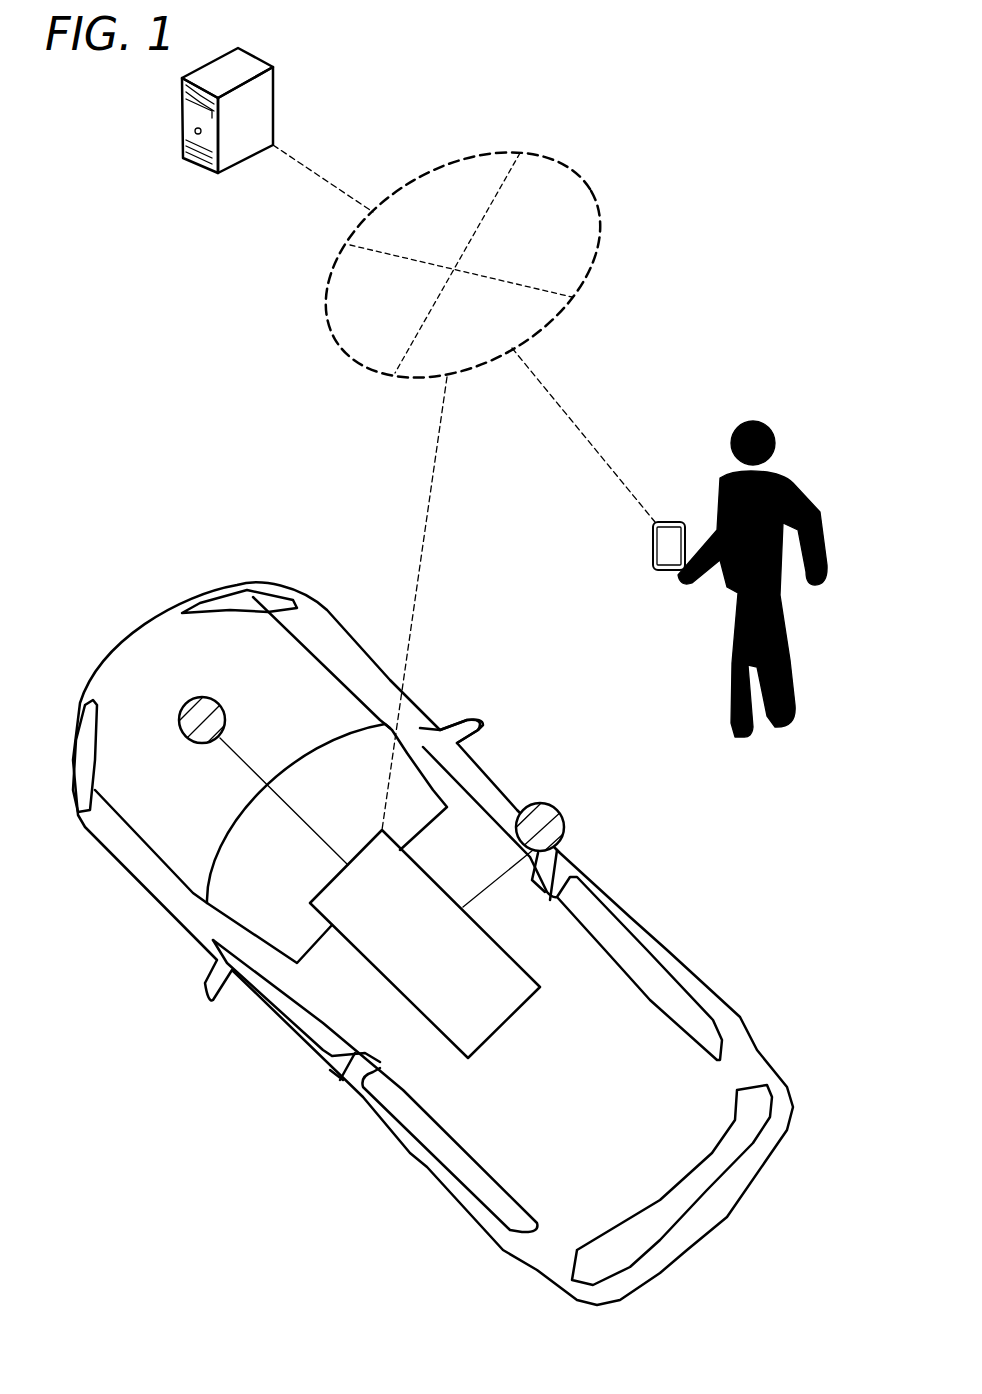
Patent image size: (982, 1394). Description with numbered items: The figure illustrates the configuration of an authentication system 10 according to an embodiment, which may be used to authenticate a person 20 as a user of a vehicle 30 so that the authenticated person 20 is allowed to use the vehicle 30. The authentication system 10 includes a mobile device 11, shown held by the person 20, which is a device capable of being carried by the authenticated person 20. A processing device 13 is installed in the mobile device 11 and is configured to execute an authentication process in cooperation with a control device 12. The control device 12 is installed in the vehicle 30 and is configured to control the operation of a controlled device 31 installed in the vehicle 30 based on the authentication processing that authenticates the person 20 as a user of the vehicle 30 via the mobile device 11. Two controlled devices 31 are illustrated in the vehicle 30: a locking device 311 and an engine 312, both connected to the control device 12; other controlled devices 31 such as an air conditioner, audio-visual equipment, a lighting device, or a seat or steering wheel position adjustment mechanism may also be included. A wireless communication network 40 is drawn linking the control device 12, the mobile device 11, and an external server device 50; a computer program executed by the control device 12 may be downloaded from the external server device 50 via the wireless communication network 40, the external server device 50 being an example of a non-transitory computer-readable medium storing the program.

The authentication system 10 is at (680, 290).
The mobile device 11 is at (629, 589).
The processing device 13 is at (663, 550).
The control device 12 is at (400, 963).
The authenticated person 20 is at (775, 430).
The vehicle 30 is at (253, 567).
The controlled device 31 is at (190, 703).
The locking device 311 is at (547, 823).
The engine 312 is at (194, 699).
The wireless communication network 40 is at (557, 160).
The external server device 50 is at (273, 107).